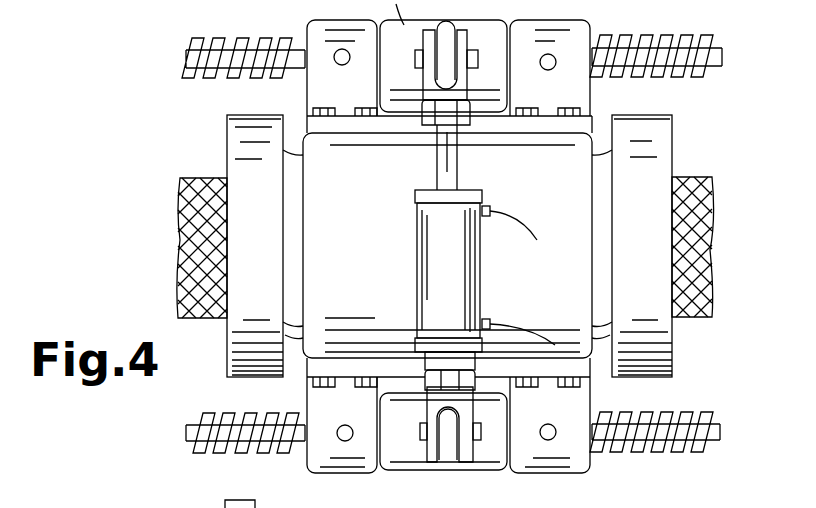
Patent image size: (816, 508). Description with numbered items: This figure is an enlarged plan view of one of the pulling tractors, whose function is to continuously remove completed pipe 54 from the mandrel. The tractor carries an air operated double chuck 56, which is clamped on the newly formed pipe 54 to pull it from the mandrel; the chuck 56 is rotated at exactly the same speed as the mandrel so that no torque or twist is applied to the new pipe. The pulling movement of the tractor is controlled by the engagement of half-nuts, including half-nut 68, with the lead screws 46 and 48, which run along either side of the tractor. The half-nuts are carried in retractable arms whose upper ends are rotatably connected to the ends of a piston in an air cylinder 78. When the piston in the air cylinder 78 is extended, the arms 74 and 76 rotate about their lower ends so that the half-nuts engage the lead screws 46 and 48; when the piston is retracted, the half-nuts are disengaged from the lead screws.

The lead screw 46 is at (218, 45).
The lead screw 48 is at (216, 415).
The completed pipe 54 is at (190, 300).
The air operated double chuck 56 is at (263, 237).
The half-nut 68 is at (405, 468).
The arm 74 is at (453, 460).
The arm 76 is at (443, 35).
The air cylinder 78 is at (437, 282).